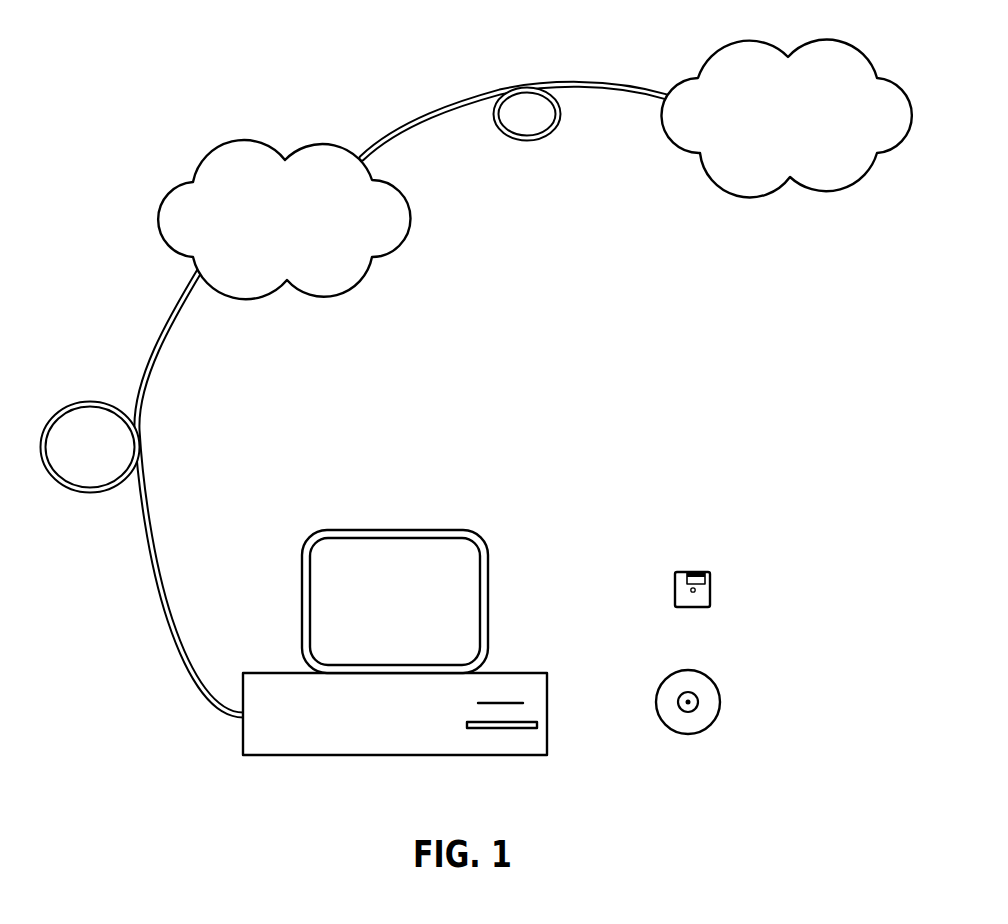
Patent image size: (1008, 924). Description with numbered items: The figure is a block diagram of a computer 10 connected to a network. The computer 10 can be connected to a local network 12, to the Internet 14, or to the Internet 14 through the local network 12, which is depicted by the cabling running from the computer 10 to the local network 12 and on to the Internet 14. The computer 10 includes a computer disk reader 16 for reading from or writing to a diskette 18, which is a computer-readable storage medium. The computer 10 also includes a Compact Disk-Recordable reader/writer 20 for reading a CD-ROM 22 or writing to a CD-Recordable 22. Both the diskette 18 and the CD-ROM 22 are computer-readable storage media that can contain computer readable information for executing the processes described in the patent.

The computer 10 is at (455, 530).
The local network 12 is at (245, 142).
The Internet 14 is at (868, 62).
The computer disk reader 16 is at (523, 703).
The diskette 18 is at (705, 572).
The Compact Disk-Recordable reader/writer 20 is at (512, 728).
The CD-ROM 22 is at (712, 682).